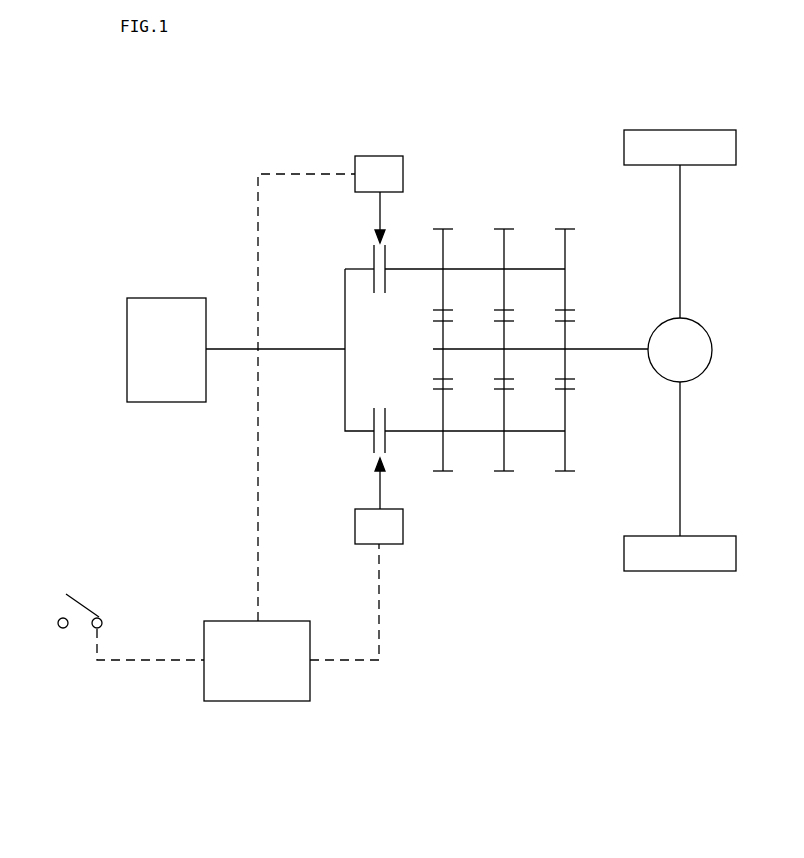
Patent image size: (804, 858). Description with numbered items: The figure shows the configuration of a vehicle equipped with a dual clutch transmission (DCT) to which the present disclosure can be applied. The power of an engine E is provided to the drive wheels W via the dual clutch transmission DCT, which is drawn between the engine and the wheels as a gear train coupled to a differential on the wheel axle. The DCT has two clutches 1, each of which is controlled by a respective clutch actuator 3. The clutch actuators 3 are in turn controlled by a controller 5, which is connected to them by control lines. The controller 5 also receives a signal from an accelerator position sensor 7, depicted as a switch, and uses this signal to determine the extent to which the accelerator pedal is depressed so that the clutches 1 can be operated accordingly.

The clutch 1 is at (362, 246).
The clutch actuator 3 is at (401, 172).
The controller 5 is at (258, 691).
The accelerator position sensor 7 is at (95, 613).
The engine E is at (160, 300).
The drive wheels W is at (678, 136).
The dual clutch transmission DCT is at (563, 131).